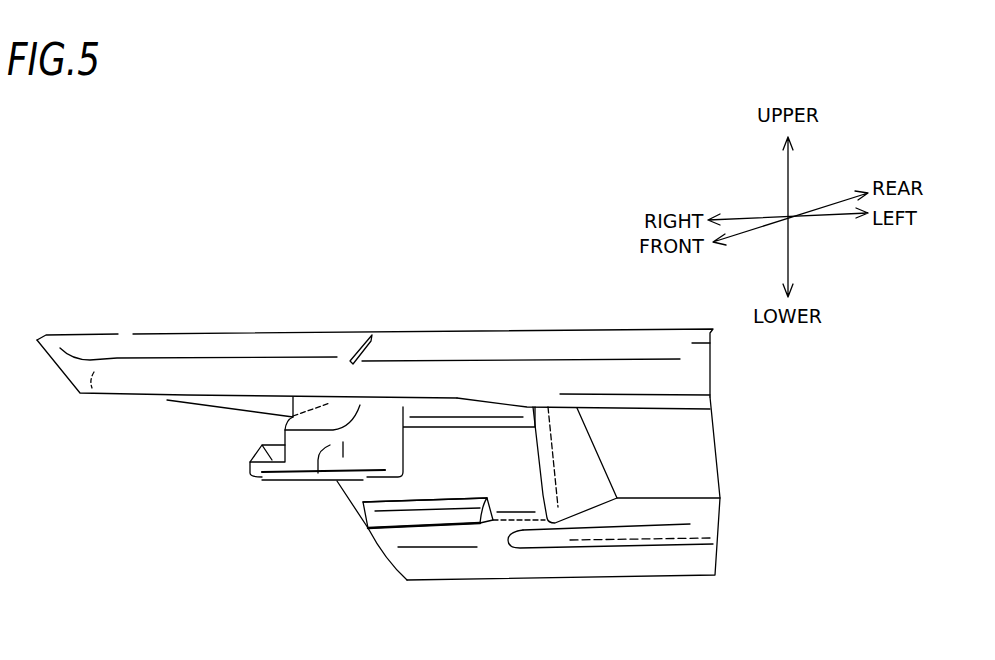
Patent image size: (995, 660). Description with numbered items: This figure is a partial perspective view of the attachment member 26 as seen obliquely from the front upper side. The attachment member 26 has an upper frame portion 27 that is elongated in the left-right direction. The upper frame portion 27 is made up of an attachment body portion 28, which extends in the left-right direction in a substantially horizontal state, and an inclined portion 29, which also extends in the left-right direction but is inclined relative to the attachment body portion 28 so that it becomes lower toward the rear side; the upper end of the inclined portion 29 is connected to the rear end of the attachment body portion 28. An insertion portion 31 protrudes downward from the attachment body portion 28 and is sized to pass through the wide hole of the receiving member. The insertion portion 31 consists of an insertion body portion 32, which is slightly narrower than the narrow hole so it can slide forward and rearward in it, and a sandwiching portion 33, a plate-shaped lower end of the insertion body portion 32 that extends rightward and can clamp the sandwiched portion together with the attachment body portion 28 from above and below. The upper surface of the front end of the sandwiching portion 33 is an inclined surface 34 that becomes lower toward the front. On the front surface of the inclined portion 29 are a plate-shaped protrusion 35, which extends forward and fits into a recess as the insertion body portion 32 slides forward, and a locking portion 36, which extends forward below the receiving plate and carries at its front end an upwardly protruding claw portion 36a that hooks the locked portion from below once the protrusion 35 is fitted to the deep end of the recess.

The attachment member 26 is at (254, 315).
The upper frame portion 27 is at (775, 335).
The attachment body portion 28 is at (710, 344).
The inclined portion 29 is at (710, 432).
The insertion portion 31 is at (342, 532).
The insertion body portion 32 is at (325, 481).
The sandwiching portion 33 is at (272, 481).
The inclined surface 34 is at (262, 447).
The protrusion 35 is at (572, 503).
The locking portion 36 is at (490, 525).
The claw portion 36a is at (443, 518).